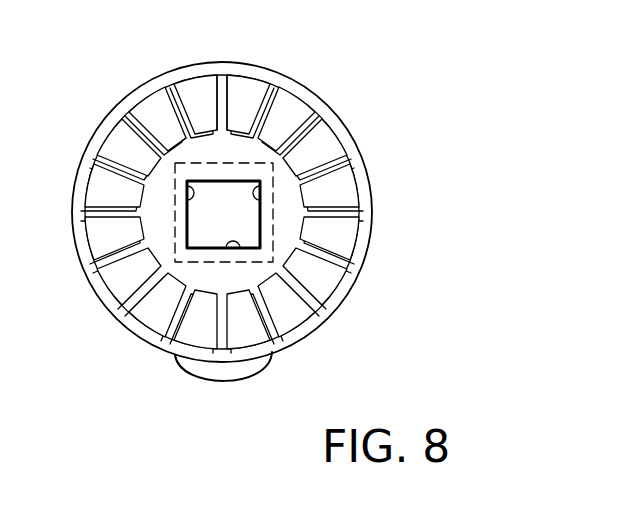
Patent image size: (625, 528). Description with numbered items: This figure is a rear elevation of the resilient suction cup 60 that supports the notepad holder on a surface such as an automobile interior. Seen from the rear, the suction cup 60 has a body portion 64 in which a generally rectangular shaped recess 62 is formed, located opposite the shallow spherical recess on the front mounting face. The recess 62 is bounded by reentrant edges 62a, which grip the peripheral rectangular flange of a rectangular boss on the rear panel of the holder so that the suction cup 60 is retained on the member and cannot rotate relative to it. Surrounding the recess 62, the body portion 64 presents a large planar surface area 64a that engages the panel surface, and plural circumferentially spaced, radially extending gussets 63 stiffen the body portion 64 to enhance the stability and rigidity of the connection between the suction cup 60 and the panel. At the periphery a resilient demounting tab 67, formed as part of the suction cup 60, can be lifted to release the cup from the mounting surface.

The suction cup 60 is at (372, 112).
The recess 62 is at (235, 227).
The reentrant edges 62a is at (222, 183).
The gussets 63 is at (218, 135).
The body portion 64 is at (283, 238).
The planar surface area 64a is at (135, 113).
The demounting tab 67 is at (212, 364).